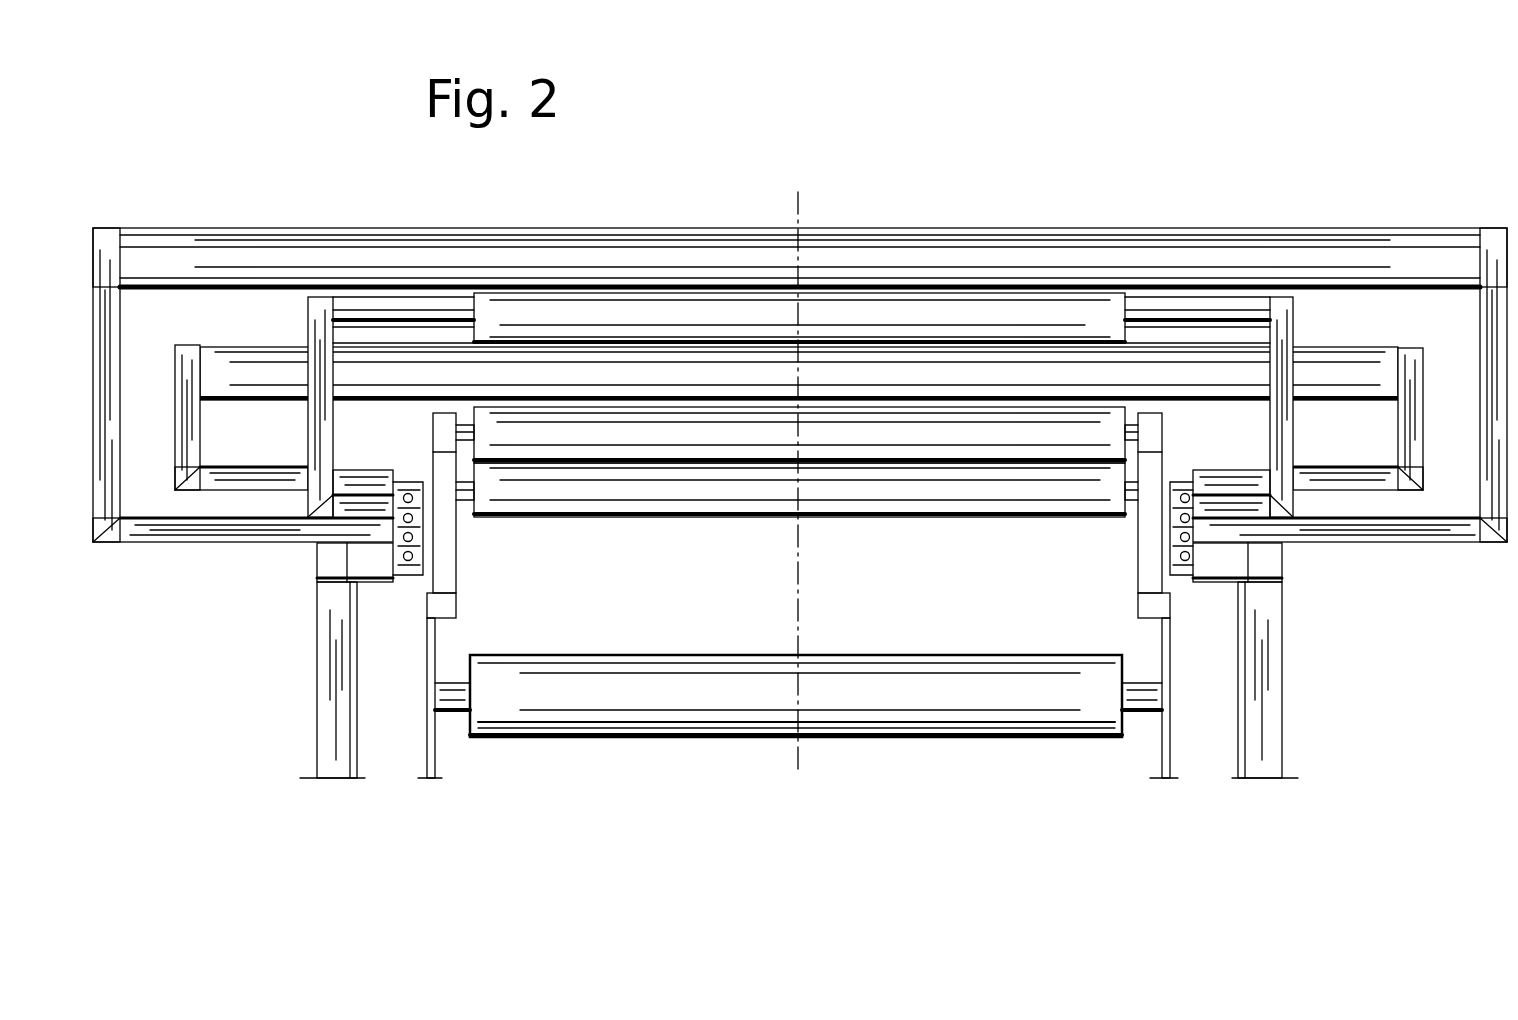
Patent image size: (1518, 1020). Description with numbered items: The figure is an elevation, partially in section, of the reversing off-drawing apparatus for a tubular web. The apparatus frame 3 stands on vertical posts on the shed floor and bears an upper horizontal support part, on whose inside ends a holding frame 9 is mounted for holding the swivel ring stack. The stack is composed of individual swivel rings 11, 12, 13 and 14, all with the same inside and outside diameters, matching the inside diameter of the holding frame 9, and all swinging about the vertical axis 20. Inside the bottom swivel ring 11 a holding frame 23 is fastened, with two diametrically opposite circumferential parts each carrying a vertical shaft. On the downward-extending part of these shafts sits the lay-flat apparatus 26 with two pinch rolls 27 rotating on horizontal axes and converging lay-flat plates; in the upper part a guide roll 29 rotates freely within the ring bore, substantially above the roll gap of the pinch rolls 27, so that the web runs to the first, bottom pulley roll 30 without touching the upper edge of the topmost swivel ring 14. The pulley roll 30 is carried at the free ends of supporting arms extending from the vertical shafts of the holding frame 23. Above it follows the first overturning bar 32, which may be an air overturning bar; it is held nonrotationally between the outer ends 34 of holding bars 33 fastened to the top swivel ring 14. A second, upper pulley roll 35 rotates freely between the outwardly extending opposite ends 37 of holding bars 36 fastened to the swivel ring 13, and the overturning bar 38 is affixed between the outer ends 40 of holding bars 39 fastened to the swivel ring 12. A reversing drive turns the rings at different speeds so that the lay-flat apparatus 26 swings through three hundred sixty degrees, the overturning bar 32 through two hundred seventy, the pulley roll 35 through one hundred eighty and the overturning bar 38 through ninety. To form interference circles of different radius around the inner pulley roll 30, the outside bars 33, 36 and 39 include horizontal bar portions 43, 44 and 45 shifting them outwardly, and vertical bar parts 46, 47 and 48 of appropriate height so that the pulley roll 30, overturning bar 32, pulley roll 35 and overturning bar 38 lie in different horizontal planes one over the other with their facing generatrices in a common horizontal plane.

The apparatus frame 3 is at (316, 707).
The holding frame 9 is at (1190, 572).
The bottom swivel ring 11 is at (408, 562).
The swivel ring 12 is at (1185, 493).
The swivel ring 13 is at (388, 526).
The topmost swivel ring 14 is at (408, 486).
The vertical axis 20 is at (796, 207).
The holding frame 23 is at (458, 558).
The lay-flat apparatus 26 is at (590, 745).
The pinch rolls 27 is at (950, 717).
The guide roll 29 is at (955, 490).
The first bottom pulley roll 30 is at (637, 437).
The first overturning bar 32 is at (1350, 355).
The holding bars 33 is at (183, 432).
The outer ends 34 is at (187, 348).
The second upper pulley roll 35 is at (1000, 305).
The holding bars 36 is at (306, 432).
The opposite ends 37 is at (320, 305).
The overturning bar 38 is at (890, 252).
The holding bars 39 is at (115, 455).
The outer ends 40 is at (801, 394).
The horizontal bar portion 43 is at (1365, 482).
The horizontal bar portion 44 is at (338, 510).
The horizontal bar portion 45 is at (168, 537).
The vertical bar part 46 is at (1413, 447).
The vertical bar part 47 is at (1282, 468).
The vertical bar part 48 is at (1495, 522).